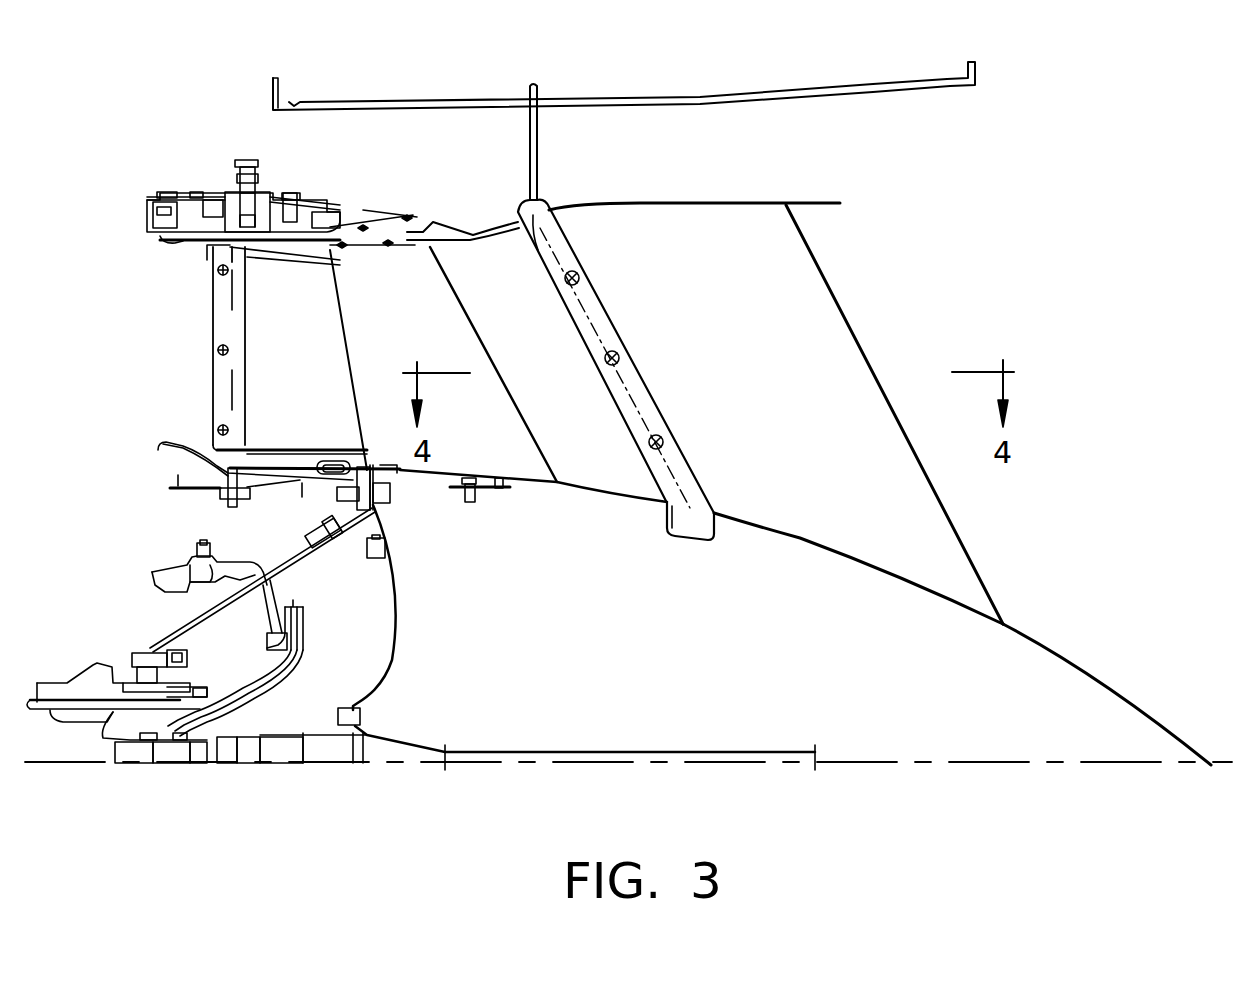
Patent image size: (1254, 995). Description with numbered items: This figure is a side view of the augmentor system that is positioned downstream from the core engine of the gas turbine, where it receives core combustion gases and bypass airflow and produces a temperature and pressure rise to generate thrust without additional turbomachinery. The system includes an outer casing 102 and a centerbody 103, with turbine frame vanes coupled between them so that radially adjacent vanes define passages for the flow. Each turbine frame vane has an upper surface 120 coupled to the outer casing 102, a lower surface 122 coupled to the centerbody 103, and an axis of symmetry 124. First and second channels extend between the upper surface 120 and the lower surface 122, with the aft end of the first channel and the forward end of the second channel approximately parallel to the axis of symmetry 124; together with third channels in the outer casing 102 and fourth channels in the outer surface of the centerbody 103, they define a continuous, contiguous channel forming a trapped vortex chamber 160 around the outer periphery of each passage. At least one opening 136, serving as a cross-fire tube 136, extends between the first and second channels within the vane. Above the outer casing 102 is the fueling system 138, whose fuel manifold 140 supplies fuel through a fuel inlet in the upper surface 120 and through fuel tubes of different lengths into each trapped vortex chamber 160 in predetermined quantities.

The outer casing 102 is at (825, 207).
The centerbody 103 is at (1089, 672).
The upper surface 120 is at (640, 208).
The lower surface 122 is at (805, 539).
The axis of symmetry 124 is at (603, 332).
The opening 136 is at (580, 279).
The fueling system 138 is at (595, 88).
The fuel manifold 140 is at (521, 90).
The trapped vortex chamber 160 is at (531, 240).